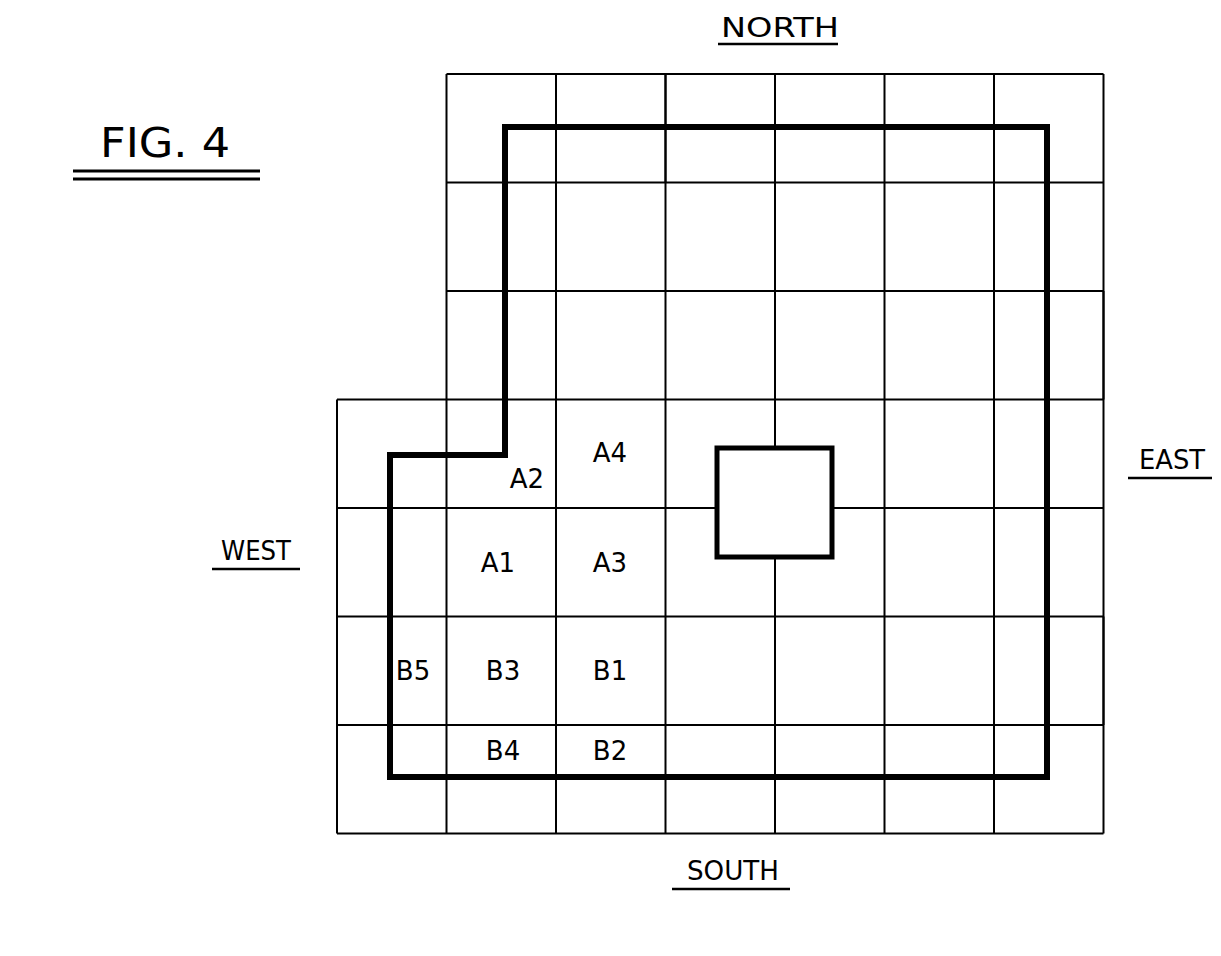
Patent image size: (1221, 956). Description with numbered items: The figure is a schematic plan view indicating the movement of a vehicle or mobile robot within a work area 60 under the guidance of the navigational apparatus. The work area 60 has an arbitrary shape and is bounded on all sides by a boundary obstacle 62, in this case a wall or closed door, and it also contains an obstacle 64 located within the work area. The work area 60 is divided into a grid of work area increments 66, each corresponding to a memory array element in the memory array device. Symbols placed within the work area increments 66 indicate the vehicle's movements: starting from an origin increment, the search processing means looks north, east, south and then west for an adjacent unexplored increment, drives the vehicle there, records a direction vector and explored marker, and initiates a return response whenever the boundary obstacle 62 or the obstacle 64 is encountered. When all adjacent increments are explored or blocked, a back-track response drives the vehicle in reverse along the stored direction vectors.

The work area 60 is at (925, 212).
The boundary obstacle 62 is at (1052, 170).
The obstacle 64 is at (749, 518).
The work area increments 66 is at (623, 197).